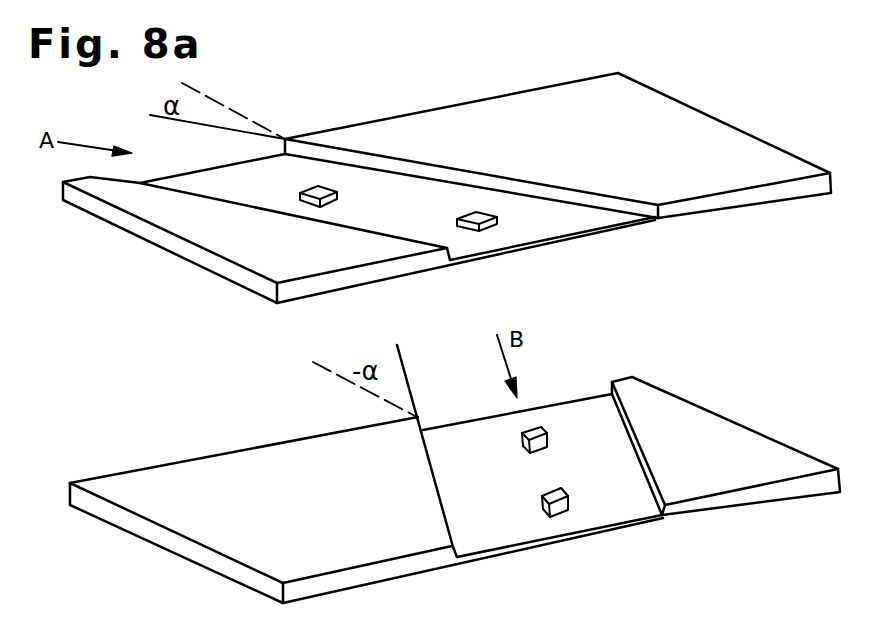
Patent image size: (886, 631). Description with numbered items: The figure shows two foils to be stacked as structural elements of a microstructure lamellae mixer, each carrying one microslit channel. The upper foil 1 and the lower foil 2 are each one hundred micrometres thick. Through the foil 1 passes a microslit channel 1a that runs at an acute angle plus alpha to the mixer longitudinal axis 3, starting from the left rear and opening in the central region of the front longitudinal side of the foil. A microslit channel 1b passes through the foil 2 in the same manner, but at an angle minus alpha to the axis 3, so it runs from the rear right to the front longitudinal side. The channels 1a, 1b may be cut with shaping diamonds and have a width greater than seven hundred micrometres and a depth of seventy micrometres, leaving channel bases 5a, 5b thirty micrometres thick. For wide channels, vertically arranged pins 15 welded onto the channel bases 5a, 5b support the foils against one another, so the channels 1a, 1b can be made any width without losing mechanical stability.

The foil 1 is at (688, 128).
The microslit channel 1a is at (543, 213).
The channel base 5a is at (547, 247).
The pins 15 is at (477, 212).
The mixer longitudinal axis 3 is at (233, 110).
The foil 2 is at (710, 440).
The microslit channel 1b is at (615, 493).
The channel base 5b is at (498, 555).